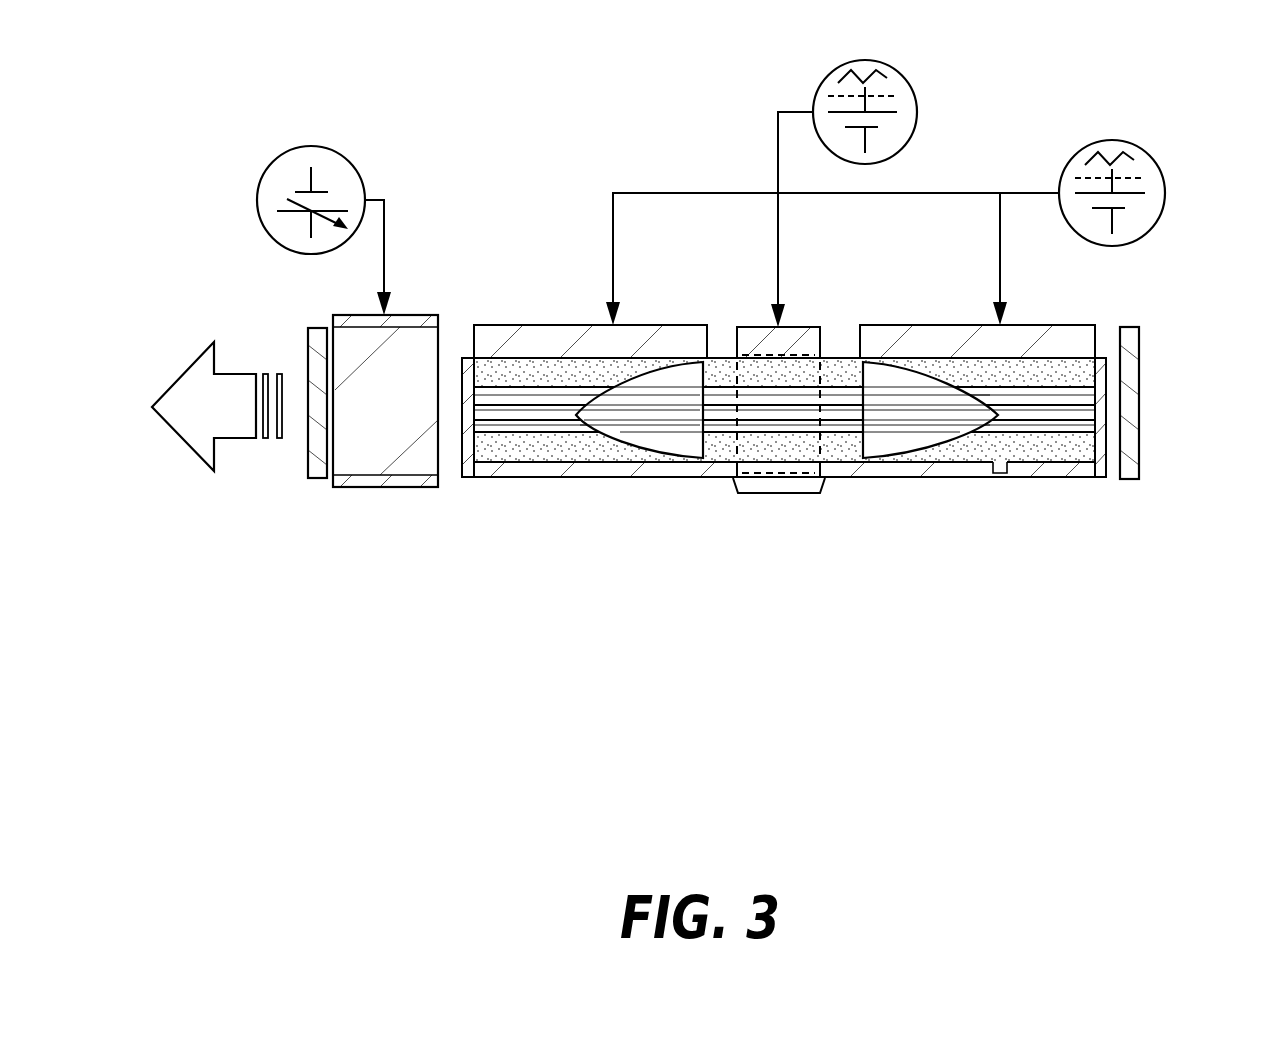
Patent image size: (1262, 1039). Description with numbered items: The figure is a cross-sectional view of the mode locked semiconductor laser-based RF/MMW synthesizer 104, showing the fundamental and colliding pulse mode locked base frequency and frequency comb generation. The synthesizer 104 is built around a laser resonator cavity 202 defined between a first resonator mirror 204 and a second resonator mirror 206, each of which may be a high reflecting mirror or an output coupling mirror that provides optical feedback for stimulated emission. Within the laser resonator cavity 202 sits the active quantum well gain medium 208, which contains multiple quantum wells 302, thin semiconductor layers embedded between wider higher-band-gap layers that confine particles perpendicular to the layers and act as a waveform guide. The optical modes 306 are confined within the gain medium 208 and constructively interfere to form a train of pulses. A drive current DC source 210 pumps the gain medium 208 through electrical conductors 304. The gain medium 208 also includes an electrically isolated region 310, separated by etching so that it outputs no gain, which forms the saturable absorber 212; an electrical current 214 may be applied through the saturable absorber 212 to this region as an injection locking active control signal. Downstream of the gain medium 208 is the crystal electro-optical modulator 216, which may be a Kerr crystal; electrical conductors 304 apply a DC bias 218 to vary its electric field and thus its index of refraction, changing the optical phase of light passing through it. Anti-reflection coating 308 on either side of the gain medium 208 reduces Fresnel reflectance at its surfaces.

The synthesizer 104 is at (178, 118).
The laser resonator cavity 202 is at (1144, 702).
The first resonator mirror 204 is at (1139, 428).
The second resonator mirror 206 is at (313, 478).
The gain medium 208 is at (1097, 569).
The DC source 210 is at (1162, 170).
The saturable absorber 212 is at (758, 327).
The electrical current 214 is at (825, 78).
The crystal electro-optical modulator 216 is at (440, 340).
The DC bias 218 is at (257, 200).
The quantum wells 302 is at (517, 427).
The electrical conductors 304 is at (520, 325).
The optical modes 306 is at (670, 455).
The anti-reflection coating 308 is at (470, 478).
The electrically isolated region 310 is at (792, 493).